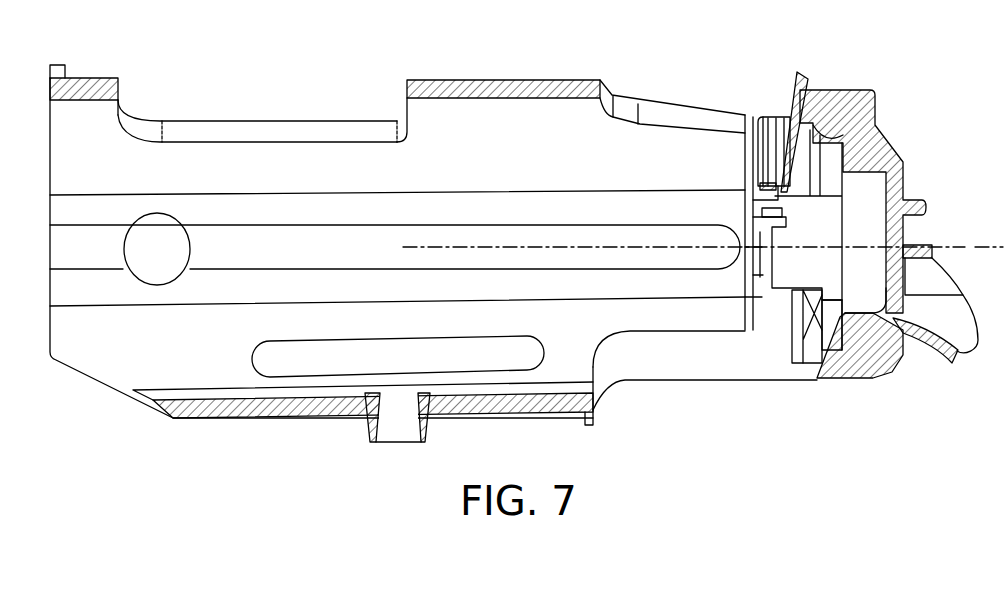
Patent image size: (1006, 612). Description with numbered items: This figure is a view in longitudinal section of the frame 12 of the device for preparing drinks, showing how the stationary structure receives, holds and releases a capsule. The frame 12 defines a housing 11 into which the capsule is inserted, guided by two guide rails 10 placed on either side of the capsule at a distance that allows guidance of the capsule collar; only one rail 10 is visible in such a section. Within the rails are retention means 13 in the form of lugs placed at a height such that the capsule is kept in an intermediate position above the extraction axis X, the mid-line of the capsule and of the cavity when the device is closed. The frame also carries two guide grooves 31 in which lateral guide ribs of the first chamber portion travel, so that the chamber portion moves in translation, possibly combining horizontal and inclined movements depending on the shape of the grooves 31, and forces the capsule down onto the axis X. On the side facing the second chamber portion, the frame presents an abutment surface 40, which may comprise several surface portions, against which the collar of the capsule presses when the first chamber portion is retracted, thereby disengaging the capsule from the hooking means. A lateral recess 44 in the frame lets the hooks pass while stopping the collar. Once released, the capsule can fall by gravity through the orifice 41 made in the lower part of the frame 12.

The guide rails 10 is at (773, 102).
The housing 11 is at (683, 112).
The frame 12 is at (477, 92).
The retention means 13 is at (781, 186).
The guide grooves 31 is at (350, 248).
The abutment surface 40 is at (756, 116).
The orifice 41 is at (620, 383).
The lateral recess 44 is at (762, 232).
The extraction axis X is at (968, 246).